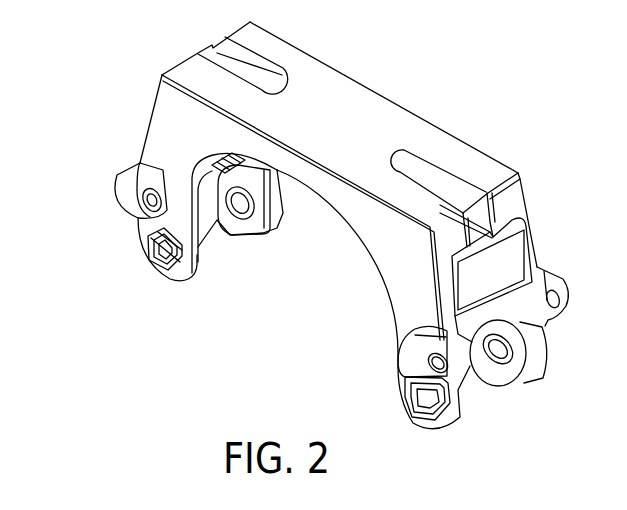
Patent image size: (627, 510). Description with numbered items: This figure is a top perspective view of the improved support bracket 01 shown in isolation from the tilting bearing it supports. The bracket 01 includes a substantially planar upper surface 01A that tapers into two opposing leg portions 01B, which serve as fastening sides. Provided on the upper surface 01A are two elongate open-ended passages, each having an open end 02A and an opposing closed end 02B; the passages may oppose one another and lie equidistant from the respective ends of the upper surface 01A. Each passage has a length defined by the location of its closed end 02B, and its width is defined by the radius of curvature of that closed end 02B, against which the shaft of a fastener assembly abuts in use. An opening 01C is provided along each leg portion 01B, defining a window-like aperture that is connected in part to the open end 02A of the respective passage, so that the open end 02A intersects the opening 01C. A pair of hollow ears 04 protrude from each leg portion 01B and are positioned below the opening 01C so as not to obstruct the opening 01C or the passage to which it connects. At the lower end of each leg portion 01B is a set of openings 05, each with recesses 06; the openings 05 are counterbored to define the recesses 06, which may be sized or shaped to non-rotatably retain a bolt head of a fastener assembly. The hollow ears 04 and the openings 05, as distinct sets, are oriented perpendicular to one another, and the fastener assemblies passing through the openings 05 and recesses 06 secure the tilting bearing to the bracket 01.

The improved support bracket 01 is at (132, 103).
The upper surface 01A is at (373, 113).
The leg portions 01B is at (512, 197).
The opening 01C is at (482, 275).
The open end 02A is at (211, 45).
The closed end 02B is at (277, 71).
The hollow ears 04 is at (132, 196).
The openings 05 is at (250, 215).
The recesses 06 is at (150, 258).